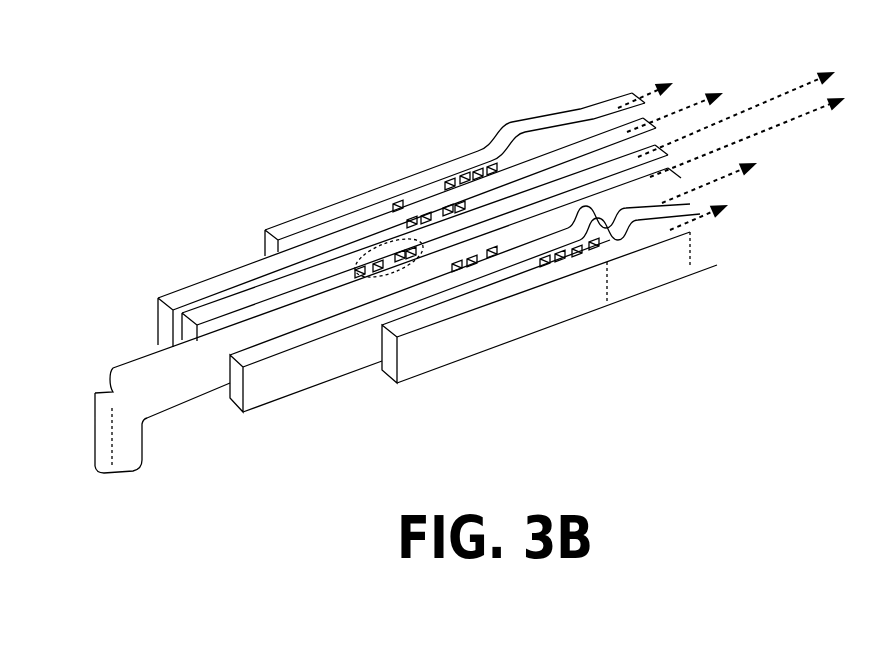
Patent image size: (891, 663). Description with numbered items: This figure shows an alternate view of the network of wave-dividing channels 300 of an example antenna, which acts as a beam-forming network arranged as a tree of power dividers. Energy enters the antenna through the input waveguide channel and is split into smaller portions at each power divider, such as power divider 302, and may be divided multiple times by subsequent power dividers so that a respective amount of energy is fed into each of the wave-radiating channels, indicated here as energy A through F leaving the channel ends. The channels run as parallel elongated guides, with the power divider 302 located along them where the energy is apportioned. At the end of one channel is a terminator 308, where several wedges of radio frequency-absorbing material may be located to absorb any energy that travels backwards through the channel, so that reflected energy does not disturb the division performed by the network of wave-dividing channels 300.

The network of wave-dividing channels 300 is at (384, 137).
The power divider 302 is at (397, 273).
The terminator 308 is at (187, 333).